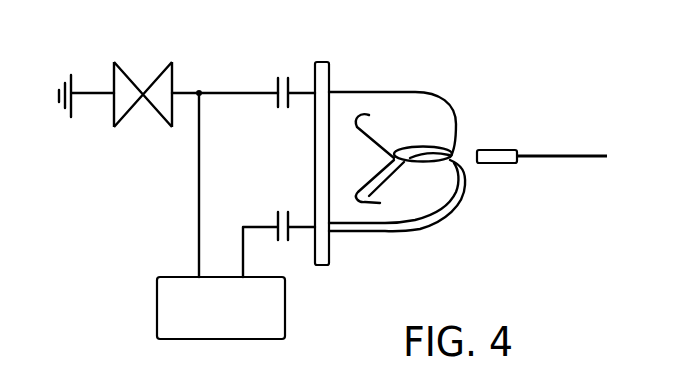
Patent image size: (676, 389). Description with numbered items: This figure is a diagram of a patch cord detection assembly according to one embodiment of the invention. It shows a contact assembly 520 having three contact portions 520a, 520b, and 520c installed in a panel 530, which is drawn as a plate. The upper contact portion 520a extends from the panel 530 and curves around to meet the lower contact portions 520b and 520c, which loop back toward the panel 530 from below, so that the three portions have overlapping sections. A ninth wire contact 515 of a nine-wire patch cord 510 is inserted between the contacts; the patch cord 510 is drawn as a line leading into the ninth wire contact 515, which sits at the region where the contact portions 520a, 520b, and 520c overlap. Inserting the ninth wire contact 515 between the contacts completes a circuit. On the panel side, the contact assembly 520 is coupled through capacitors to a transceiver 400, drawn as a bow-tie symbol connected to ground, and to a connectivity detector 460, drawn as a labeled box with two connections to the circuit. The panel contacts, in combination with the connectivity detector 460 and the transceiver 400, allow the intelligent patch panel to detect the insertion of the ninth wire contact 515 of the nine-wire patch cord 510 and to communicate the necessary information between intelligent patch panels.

The transceiver 400 is at (150, 75).
The panel 530 is at (333, 82).
The contact assembly 520 is at (416, 160).
The contact portion 520a is at (363, 91).
The contact portion 520b is at (357, 232).
The contact portion 520c is at (432, 216).
The ninth wire contact 515 is at (488, 150).
The nine-wire patch cord 510 is at (545, 154).
The connectivity detector 460 is at (233, 340).